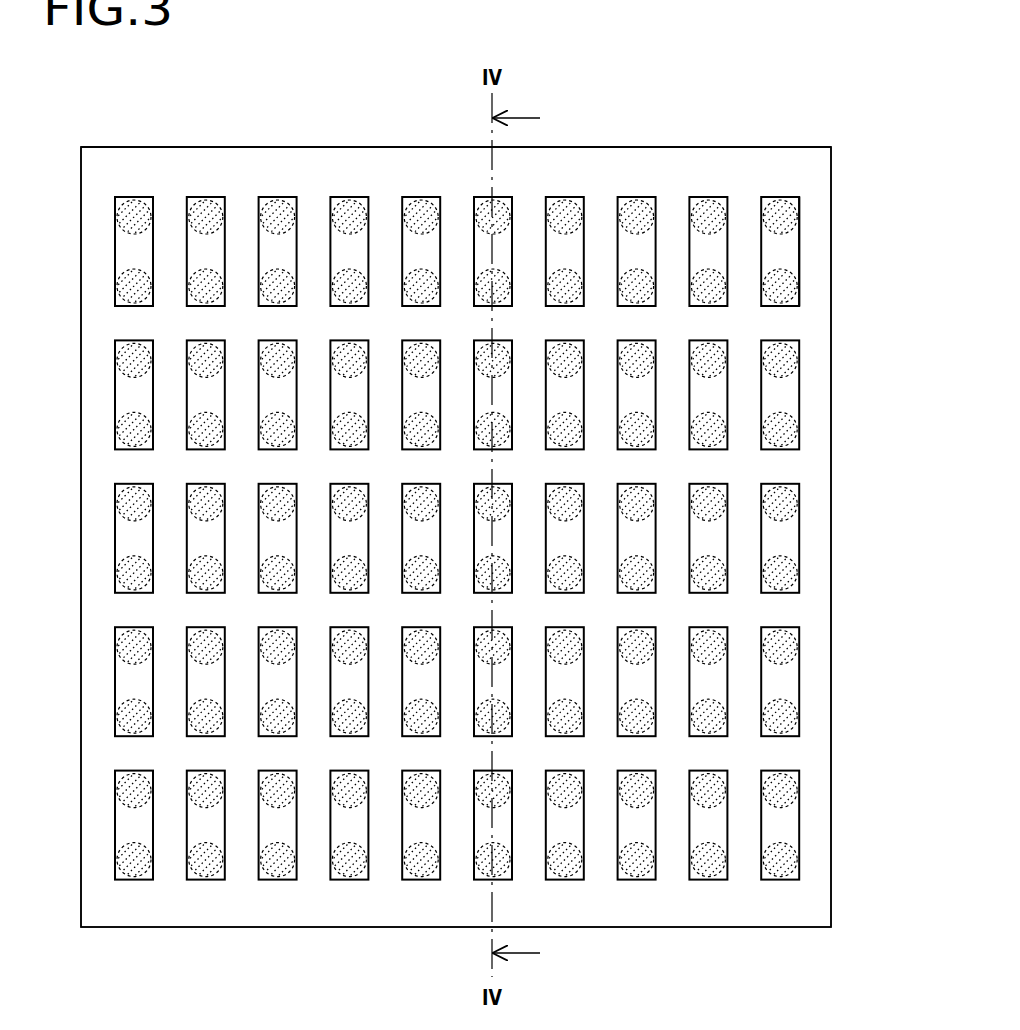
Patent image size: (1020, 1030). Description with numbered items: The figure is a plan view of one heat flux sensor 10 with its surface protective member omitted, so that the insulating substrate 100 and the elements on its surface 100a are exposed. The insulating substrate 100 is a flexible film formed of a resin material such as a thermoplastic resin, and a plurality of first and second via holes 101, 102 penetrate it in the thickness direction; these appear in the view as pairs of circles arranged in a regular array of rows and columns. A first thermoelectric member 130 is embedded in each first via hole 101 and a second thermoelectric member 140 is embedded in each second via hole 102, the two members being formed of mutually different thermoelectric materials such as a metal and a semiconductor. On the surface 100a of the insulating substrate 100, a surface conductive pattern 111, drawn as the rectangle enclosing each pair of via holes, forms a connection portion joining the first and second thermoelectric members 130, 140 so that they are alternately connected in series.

The heat flux sensor 10 is at (105, 117).
The insulating substrate 100 is at (245, 147).
The surface of the insulating substrate 100a is at (582, 176).
The first via hole 101 is at (800, 297).
The second via hole 102 is at (799, 217).
The surface conductive pattern 111 is at (792, 257).
The first thermoelectric member 130 is at (797, 308).
The second thermoelectric member 140 is at (800, 239).